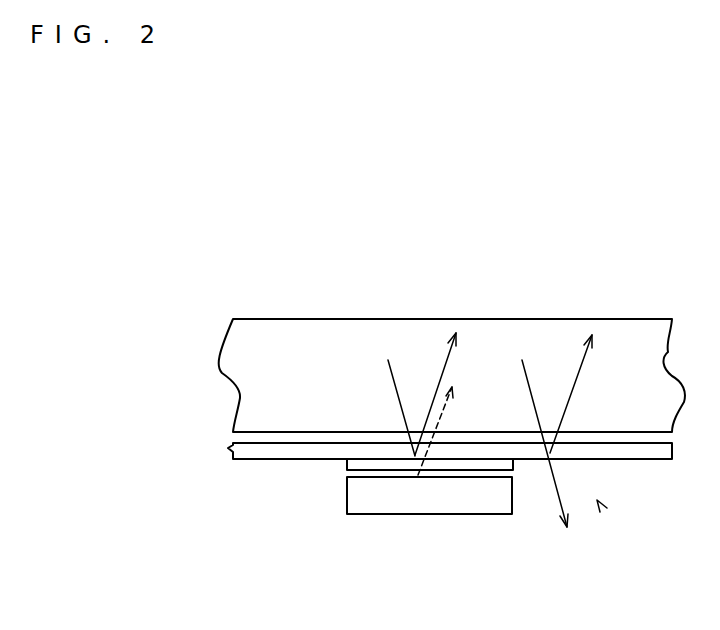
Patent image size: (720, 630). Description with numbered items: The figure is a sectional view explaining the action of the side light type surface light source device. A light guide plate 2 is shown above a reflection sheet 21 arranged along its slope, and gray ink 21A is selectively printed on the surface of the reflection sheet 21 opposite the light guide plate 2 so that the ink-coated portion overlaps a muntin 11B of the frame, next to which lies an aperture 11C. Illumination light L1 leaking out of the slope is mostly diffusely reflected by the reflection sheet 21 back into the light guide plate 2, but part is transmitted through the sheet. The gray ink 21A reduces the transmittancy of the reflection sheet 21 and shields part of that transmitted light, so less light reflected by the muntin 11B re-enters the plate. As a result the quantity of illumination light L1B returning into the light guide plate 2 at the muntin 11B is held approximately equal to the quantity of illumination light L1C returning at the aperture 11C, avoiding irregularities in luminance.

The light guide plate 2 is at (242, 367).
The reflection sheet 21 is at (640, 452).
The gray ink 21A is at (347, 466).
The muntin 11B is at (435, 492).
The aperture 11C is at (597, 500).
The illumination light L1 is at (397, 383).
The illumination light returning in muntin portion L1B is at (440, 373).
The illumination light returning in aperture portion L1C is at (580, 372).